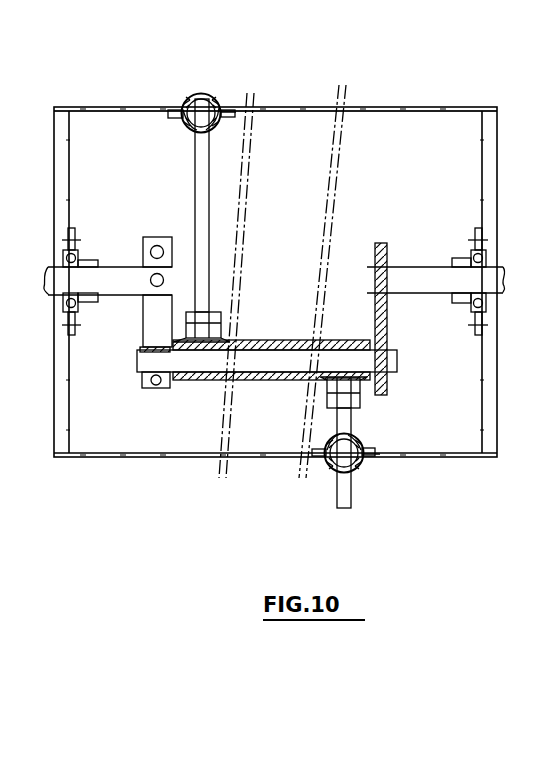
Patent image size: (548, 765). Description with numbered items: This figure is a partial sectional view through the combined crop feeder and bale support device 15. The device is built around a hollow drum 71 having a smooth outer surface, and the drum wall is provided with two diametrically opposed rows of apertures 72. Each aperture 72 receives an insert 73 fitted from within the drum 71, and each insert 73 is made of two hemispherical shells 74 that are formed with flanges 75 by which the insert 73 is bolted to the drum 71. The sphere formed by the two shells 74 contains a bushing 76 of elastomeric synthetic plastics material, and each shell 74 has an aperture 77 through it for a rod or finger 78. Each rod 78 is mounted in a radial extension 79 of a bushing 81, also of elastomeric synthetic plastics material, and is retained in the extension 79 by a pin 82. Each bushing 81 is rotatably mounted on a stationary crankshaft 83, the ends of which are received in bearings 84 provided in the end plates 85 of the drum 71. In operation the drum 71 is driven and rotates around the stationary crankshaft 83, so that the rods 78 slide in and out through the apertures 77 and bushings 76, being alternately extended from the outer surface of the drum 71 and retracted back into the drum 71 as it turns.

The combined crop feeder and bale support device 15 is at (452, 92).
The hollow drum 71 is at (292, 107).
The apertures 72 is at (182, 110).
The insert 73 is at (203, 86).
The hemispherical shells 74 is at (214, 100).
The flanges 75 is at (228, 115).
The bushing 76 is at (223, 111).
The aperture 77 is at (195, 97).
The rod or finger 78 is at (209, 232).
The radial extension 79 is at (221, 334).
The bushing 81 is at (346, 349).
The pin 82 is at (213, 322).
The stationary crankshaft 83 is at (130, 290).
The bearings 84 is at (82, 258).
The end plates 85 is at (69, 163).